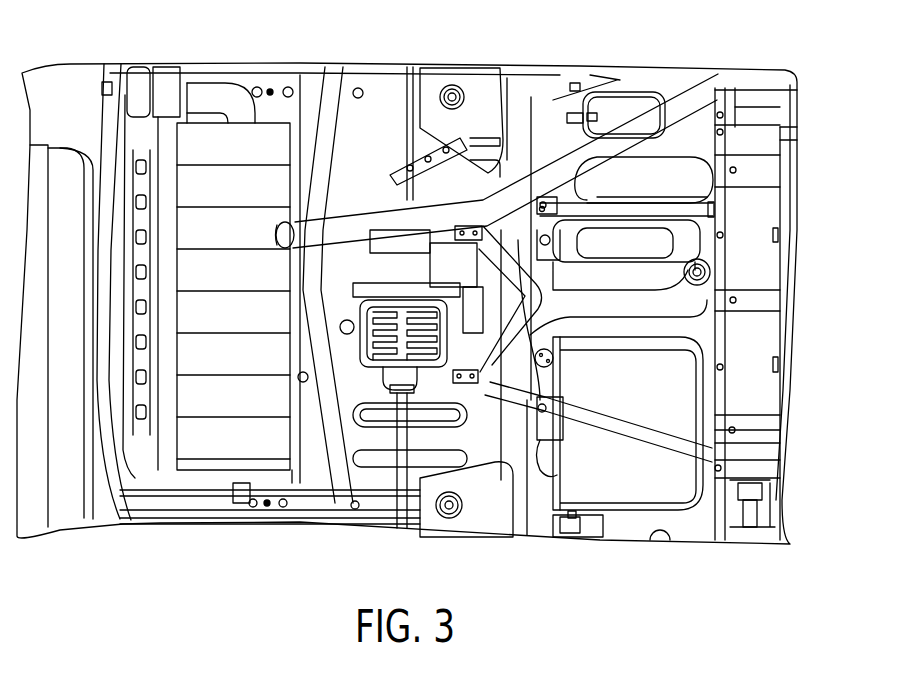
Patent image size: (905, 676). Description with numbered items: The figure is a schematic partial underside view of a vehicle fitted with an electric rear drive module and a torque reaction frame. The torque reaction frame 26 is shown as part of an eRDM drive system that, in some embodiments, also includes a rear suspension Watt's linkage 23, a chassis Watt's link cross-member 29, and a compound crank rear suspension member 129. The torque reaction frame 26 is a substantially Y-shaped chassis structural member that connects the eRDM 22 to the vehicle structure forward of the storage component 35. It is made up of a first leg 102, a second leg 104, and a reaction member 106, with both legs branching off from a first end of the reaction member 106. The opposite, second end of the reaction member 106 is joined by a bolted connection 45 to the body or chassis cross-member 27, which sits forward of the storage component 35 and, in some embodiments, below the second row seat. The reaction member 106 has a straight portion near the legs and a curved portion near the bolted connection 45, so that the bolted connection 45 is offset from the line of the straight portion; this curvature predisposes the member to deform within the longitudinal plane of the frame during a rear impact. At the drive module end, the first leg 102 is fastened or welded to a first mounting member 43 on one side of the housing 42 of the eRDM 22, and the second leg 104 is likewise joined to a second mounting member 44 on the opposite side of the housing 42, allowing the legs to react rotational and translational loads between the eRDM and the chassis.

The eRDM 22 is at (376, 382).
The rear suspension Watt's linkage 23 is at (323, 170).
The torque reaction frame 26 is at (580, 305).
The body or chassis cross-member 27 is at (713, 390).
The chassis Watt's link cross-member 29 is at (357, 110).
The storage component 35 is at (663, 195).
The housing 42 is at (400, 372).
The first mounting member 43 is at (478, 235).
The second mounting member 44 is at (468, 383).
The bolted connection 45 is at (708, 268).
The first leg 102 is at (518, 242).
The second leg 104 is at (540, 397).
The reaction member 106 is at (627, 312).
The compound crank rear suspension member 129 is at (477, 82).